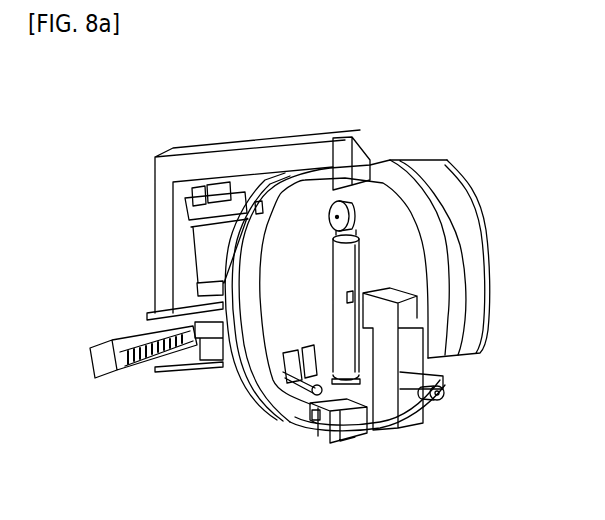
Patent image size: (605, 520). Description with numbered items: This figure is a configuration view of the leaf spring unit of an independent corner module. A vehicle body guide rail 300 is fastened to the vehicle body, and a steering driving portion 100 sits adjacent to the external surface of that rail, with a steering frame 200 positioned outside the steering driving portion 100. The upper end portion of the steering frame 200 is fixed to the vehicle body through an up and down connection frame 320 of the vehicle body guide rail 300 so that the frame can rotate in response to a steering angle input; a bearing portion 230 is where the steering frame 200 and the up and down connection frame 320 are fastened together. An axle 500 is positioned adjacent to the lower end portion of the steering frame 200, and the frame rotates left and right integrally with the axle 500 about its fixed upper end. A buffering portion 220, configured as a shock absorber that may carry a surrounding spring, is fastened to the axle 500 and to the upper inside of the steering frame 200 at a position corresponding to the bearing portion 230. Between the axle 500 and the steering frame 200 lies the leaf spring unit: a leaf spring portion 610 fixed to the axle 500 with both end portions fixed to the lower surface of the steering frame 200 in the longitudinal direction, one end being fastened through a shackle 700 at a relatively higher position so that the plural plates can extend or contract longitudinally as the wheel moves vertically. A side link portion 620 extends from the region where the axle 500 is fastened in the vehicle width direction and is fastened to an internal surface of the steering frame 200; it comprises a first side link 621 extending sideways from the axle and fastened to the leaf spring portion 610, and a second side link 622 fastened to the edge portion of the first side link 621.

The steering driving portion 100 is at (171, 224).
The steering frame 200 is at (238, 373).
The buffering portion 220 is at (357, 262).
The bearing portion 230 is at (348, 180).
The vehicle body guide rail 300 is at (107, 358).
The up and down connection frame 320 is at (247, 163).
The axle 500 is at (390, 430).
The leaf spring portion 610 is at (420, 410).
The side link portion 620 is at (317, 413).
The first side link 621 is at (290, 403).
The second side link 622 is at (425, 372).
The shackle 700 is at (445, 388).